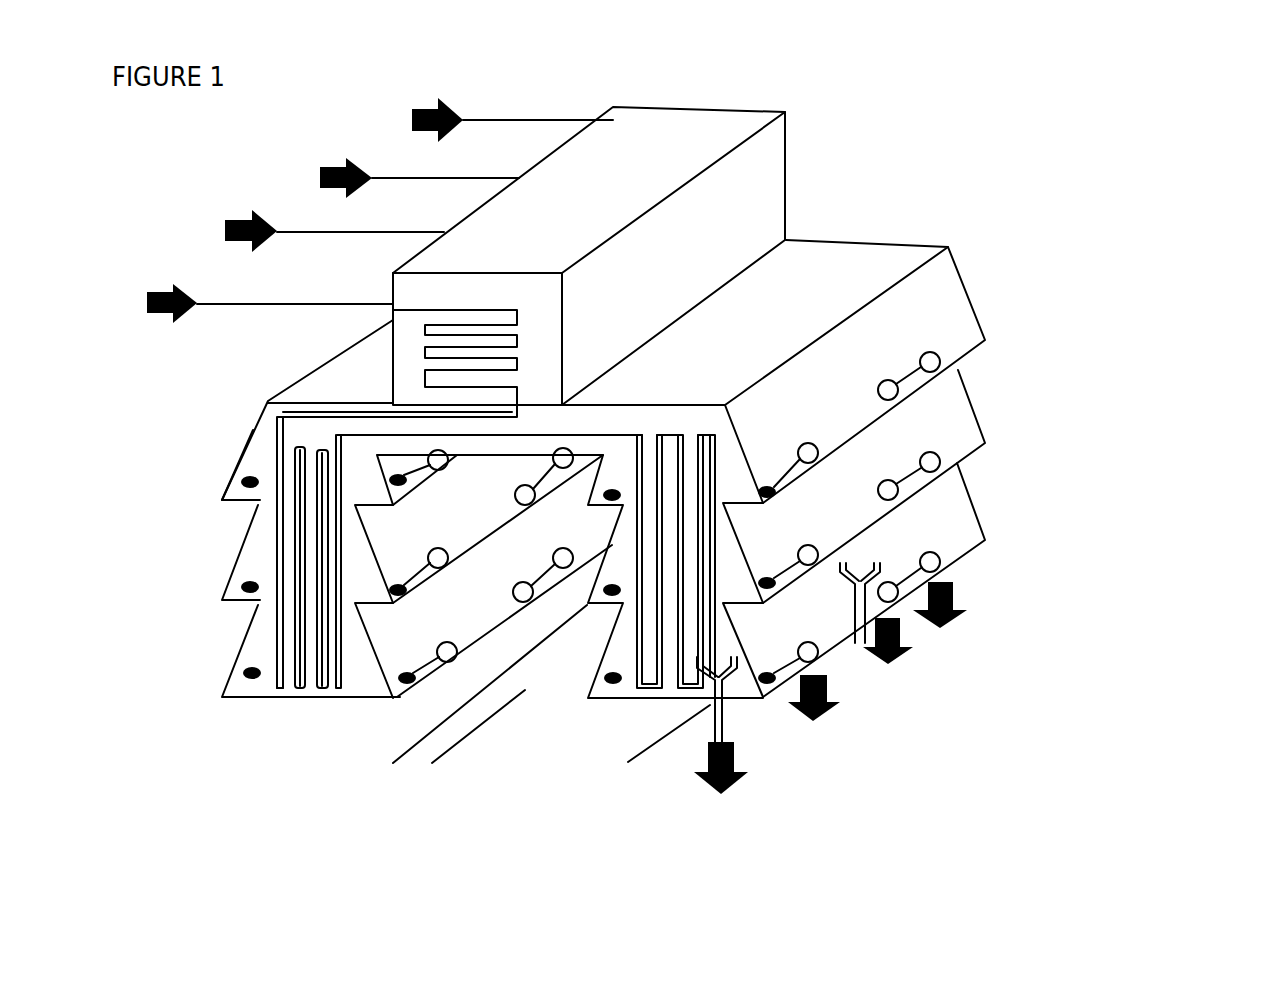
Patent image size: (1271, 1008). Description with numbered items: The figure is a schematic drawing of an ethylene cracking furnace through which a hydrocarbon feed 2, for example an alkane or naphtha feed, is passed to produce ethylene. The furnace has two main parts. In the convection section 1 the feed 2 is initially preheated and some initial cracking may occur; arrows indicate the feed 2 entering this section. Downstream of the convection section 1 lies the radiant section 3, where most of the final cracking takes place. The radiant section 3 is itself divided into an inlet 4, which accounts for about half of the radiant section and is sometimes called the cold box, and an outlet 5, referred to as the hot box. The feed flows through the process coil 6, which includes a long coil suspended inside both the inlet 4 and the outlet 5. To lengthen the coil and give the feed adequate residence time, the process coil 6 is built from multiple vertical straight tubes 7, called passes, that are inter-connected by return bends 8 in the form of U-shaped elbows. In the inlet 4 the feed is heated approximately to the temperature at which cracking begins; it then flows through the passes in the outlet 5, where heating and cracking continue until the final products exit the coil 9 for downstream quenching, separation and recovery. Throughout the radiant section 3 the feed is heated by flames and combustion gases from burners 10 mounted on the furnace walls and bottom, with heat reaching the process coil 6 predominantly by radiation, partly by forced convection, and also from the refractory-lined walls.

The convection section 1 is at (589, 256).
The feed 2 is at (365, 210).
The radiant section 3 is at (1156, 247).
The inlet 4 is at (307, 410).
The outlet 5 is at (755, 322).
The process coil 6 is at (397, 482).
The vertical straight tubes 7 is at (328, 628).
The return bends 8 is at (333, 688).
The coil exit 9 is at (721, 742).
The burners 10 is at (955, 371).